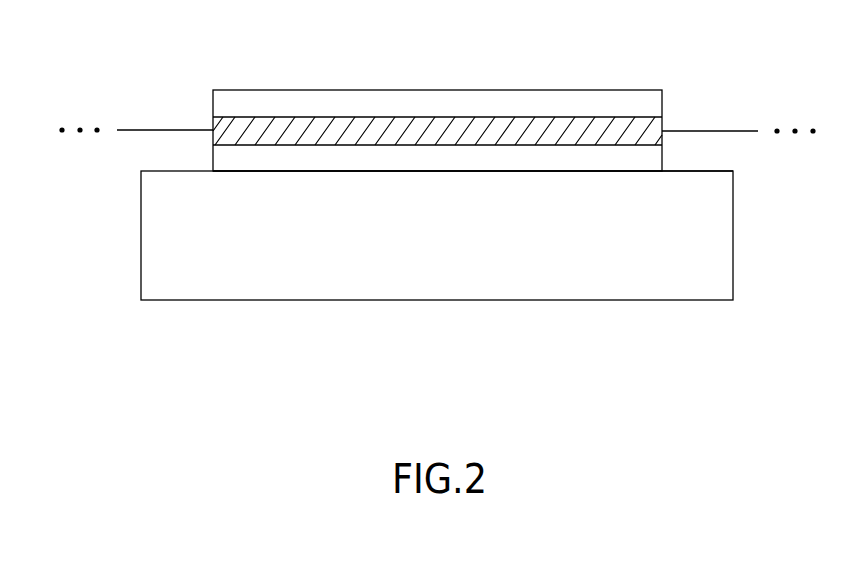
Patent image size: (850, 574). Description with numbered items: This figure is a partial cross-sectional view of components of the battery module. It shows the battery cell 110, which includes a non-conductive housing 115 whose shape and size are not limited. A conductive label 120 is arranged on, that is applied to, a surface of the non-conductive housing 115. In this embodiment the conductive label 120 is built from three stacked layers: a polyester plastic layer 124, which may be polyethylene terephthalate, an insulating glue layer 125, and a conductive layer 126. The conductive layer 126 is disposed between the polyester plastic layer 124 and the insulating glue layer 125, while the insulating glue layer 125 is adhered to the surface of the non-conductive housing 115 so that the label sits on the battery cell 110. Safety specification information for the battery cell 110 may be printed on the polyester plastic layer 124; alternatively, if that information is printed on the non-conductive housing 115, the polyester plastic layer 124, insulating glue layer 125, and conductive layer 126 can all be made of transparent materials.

The battery cell 110 is at (718, 235).
The non-conductive housing 115 is at (705, 171).
The conductive label 120 is at (368, 95).
The polyester plastic layer 124 is at (619, 100).
The insulating glue layer 125 is at (400, 160).
The conductive layer 126 is at (510, 130).